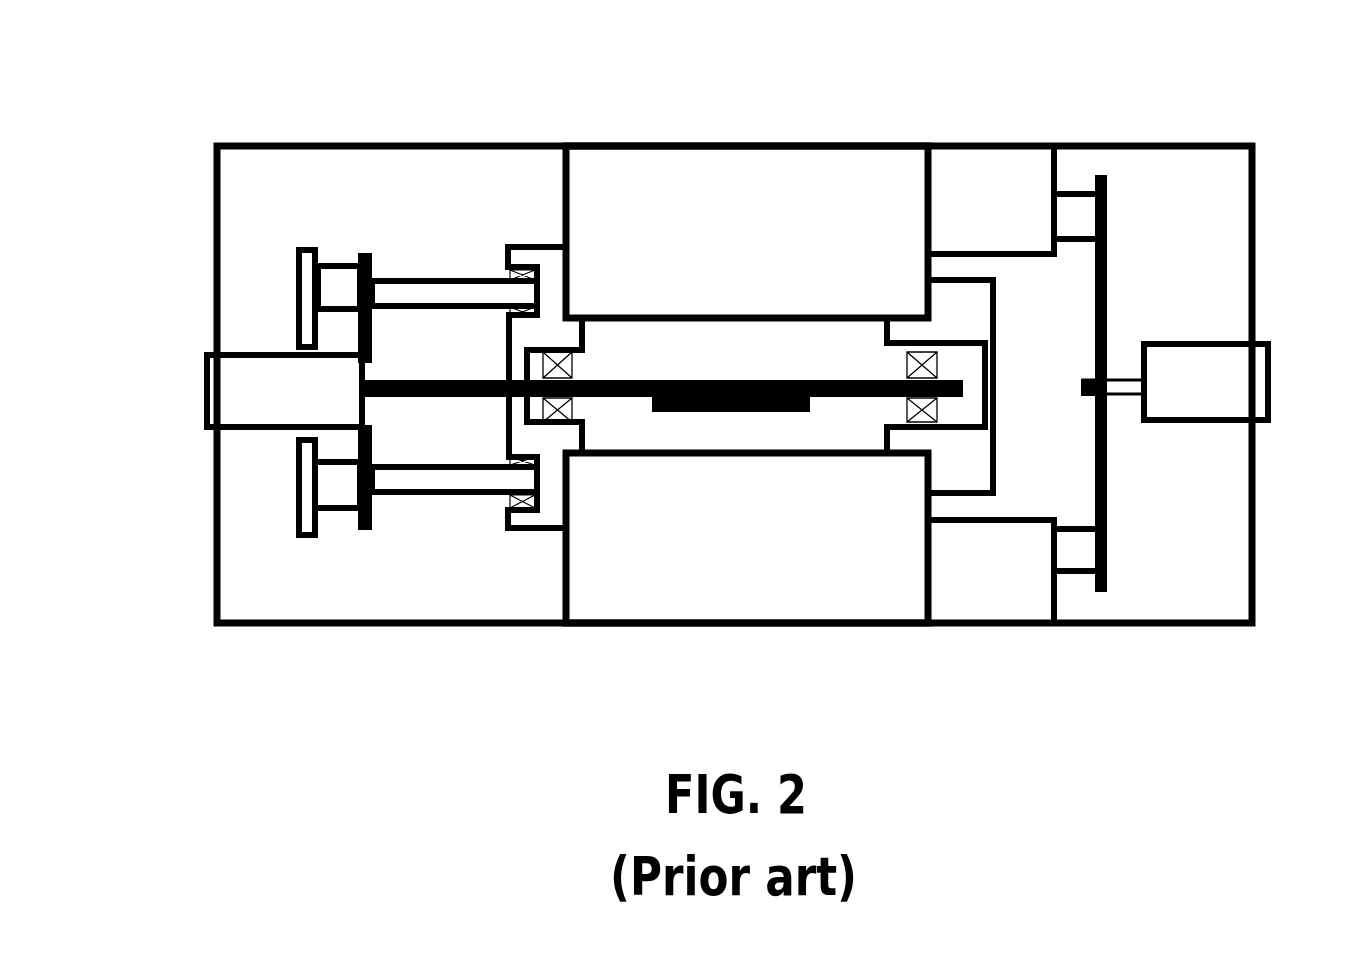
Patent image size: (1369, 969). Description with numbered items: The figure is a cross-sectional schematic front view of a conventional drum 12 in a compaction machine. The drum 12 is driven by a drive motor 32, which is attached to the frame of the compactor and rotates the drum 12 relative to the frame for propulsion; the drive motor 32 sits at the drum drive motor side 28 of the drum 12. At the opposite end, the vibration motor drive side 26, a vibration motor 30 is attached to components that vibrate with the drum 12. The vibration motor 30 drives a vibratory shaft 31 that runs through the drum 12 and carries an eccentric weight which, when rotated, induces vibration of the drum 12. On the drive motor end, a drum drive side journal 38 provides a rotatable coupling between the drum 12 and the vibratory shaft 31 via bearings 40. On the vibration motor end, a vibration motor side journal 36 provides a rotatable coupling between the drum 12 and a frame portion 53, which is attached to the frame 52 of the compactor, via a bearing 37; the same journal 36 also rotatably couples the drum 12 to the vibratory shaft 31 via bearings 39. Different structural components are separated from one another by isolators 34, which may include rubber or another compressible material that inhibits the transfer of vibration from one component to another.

The drum 12 is at (495, 142).
The vibration motor drive side 26 is at (208, 525).
The drum drive motor side 28 is at (1264, 508).
The vibration motor 30 is at (258, 398).
The vibratory shaft 31 is at (683, 380).
The drive motor 32 is at (1220, 380).
The isolators 34 is at (295, 252).
The vibration motor side journal 36 is at (510, 272).
The bearing 37 is at (510, 313).
The drum drive side journal 38 is at (947, 293).
The bearings 39 is at (540, 370).
The bearings 40 is at (907, 360).
The frame 52 is at (307, 282).
The frame portion 53 is at (425, 487).